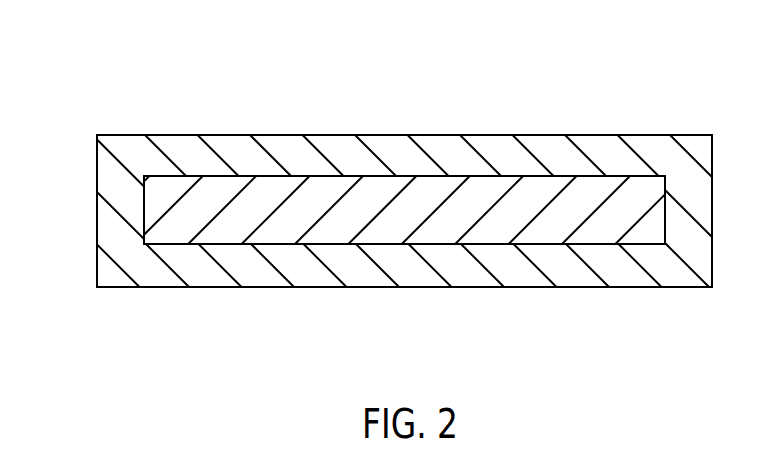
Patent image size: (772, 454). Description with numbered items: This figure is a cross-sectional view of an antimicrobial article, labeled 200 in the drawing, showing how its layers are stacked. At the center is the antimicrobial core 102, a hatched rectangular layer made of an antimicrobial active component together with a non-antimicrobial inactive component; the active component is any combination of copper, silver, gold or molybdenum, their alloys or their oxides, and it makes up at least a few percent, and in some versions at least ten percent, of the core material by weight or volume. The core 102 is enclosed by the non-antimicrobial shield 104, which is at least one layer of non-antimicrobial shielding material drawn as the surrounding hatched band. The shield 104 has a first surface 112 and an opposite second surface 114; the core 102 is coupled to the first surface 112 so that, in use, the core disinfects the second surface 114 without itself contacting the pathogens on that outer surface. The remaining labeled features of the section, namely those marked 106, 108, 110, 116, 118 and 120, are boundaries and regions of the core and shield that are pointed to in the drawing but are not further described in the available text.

The semiconductor device assembly 200 is at (115, 71).
The antimicrobial core 102 is at (657, 212).
The non-antimicrobial shield 104 is at (115, 232).
The die top surface 106 is at (398, 176).
The die bottom surface 108 is at (396, 244).
The encapsulant top portion 110 is at (593, 147).
The first surface 112 is at (223, 135).
The second surface 114 is at (176, 177).
The encapsulant bottom portion 116 is at (625, 275).
The die bottom edge 118 is at (174, 243).
The encapsulant bottom surface 120 is at (318, 287).